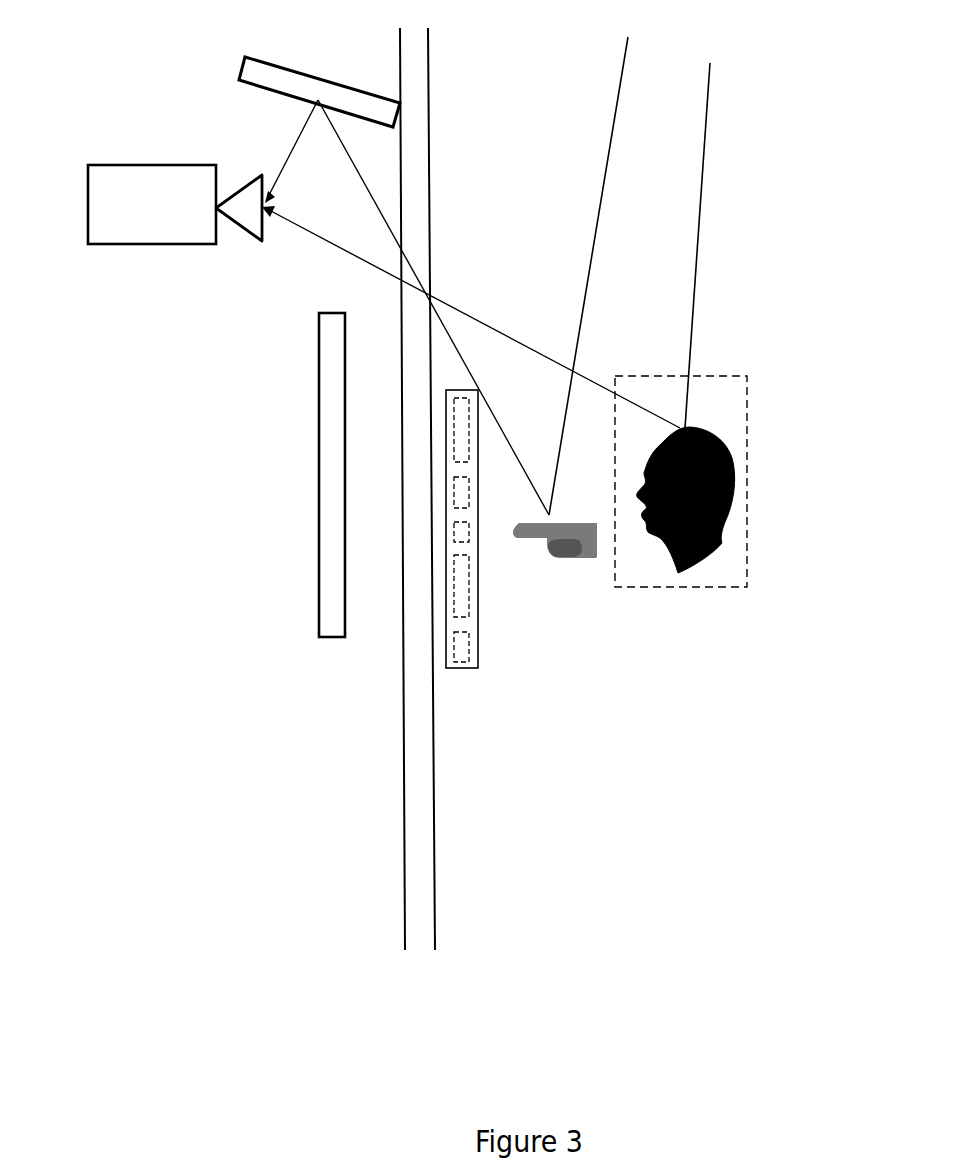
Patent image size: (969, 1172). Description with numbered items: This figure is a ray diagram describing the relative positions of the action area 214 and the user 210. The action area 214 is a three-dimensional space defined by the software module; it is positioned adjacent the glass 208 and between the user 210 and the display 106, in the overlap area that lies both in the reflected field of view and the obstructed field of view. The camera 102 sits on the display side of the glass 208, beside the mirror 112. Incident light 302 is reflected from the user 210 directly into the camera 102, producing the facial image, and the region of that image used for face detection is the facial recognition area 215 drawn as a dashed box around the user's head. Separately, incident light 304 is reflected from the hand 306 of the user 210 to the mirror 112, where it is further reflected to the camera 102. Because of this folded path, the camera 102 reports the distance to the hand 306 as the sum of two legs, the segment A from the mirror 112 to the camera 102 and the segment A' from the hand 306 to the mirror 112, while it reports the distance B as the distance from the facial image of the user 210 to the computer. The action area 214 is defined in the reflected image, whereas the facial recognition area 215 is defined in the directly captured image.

The camera 102 is at (121, 163).
The mirror 112 is at (240, 72).
The display 106 is at (319, 598).
The glass 208 is at (403, 787).
The action area 214 is at (480, 648).
The user 210 is at (735, 470).
The facial recognition area 215 is at (752, 538).
The incident light 302 is at (708, 113).
The incident light 304 is at (605, 170).
The hand 306 is at (587, 555).
The distance A is at (268, 150).
The distance A' is at (433, 307).
The distance B is at (344, 252).